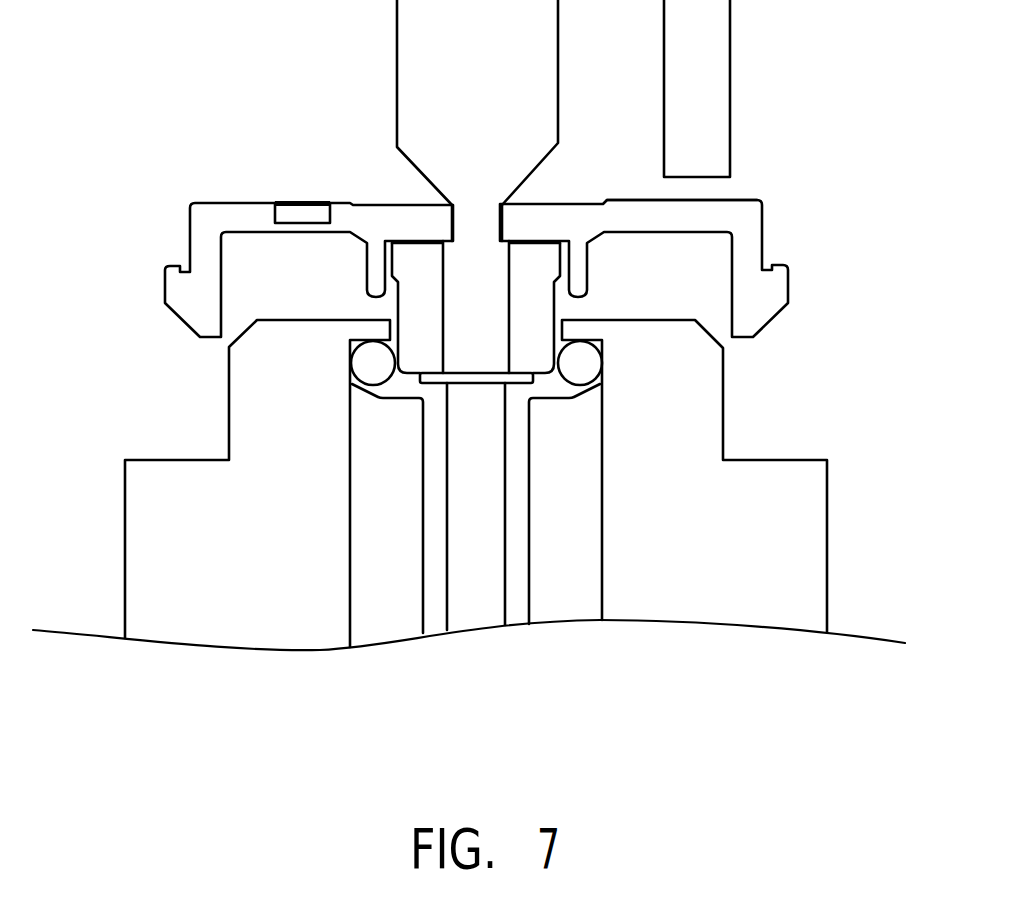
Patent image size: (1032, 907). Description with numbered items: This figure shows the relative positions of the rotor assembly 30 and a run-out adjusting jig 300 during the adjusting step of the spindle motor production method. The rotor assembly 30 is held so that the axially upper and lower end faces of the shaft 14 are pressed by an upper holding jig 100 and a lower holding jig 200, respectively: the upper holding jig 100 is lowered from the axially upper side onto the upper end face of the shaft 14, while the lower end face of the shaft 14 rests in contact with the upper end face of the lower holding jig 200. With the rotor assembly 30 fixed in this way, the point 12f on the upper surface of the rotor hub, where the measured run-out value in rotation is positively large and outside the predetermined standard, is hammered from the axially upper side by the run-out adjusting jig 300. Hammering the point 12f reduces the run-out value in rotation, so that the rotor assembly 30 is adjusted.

The rotor assembly 30 is at (330, 167).
The point 12f is at (673, 200).
The upper holding jig 100 is at (467, 113).
The run-out adjusting jig 300 is at (703, 65).
The shaft 14 is at (485, 302).
The lower holding jig 200 is at (490, 572).